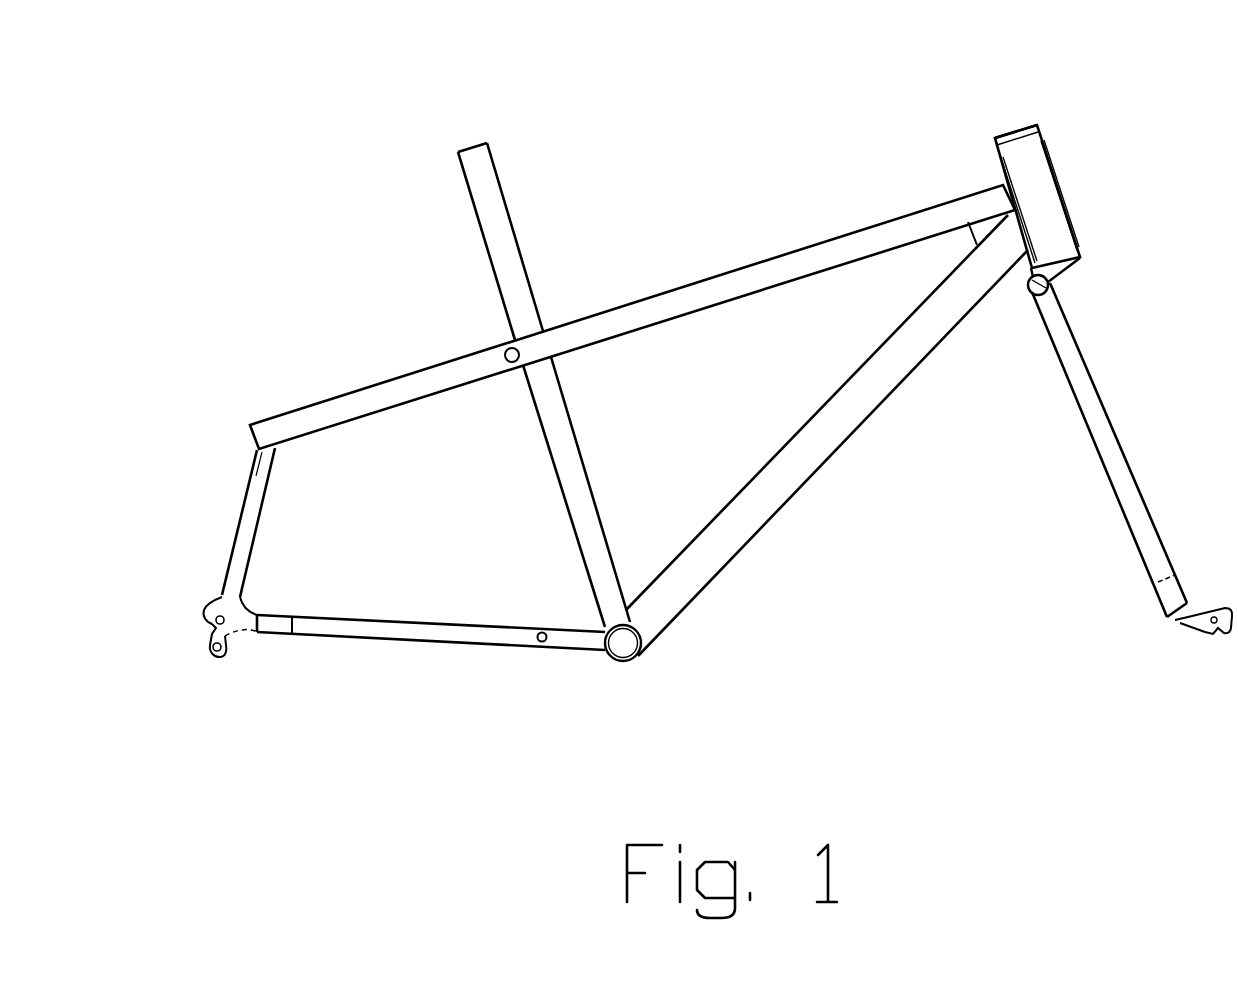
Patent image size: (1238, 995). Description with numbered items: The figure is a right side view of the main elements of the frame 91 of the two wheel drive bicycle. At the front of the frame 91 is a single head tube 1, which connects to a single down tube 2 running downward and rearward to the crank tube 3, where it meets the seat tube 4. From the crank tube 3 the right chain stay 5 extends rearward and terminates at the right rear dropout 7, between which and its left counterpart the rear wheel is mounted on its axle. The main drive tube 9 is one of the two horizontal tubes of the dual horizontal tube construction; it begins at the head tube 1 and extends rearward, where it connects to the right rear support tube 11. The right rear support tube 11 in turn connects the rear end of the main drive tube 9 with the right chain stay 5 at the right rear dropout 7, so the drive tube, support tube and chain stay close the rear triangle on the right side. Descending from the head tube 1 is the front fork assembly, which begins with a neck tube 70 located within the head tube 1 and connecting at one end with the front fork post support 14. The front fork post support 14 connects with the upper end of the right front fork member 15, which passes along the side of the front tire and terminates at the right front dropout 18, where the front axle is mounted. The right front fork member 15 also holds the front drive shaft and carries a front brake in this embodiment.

The frame 91 is at (622, 84).
The head tube 1 is at (1065, 193).
The neck tube 70 is at (1038, 127).
The main drive tube 9 is at (632, 269).
The seat tube 4 is at (553, 385).
The down tube 2 is at (833, 457).
The crank tube 3 is at (608, 658).
The right chain stay 5 is at (362, 638).
The right rear dropout 7 is at (210, 653).
The right rear support tube 11 is at (245, 510).
The front fork post support 14 is at (1032, 295).
The right front fork member 15 is at (1118, 435).
The right front dropout 18 is at (1197, 631).